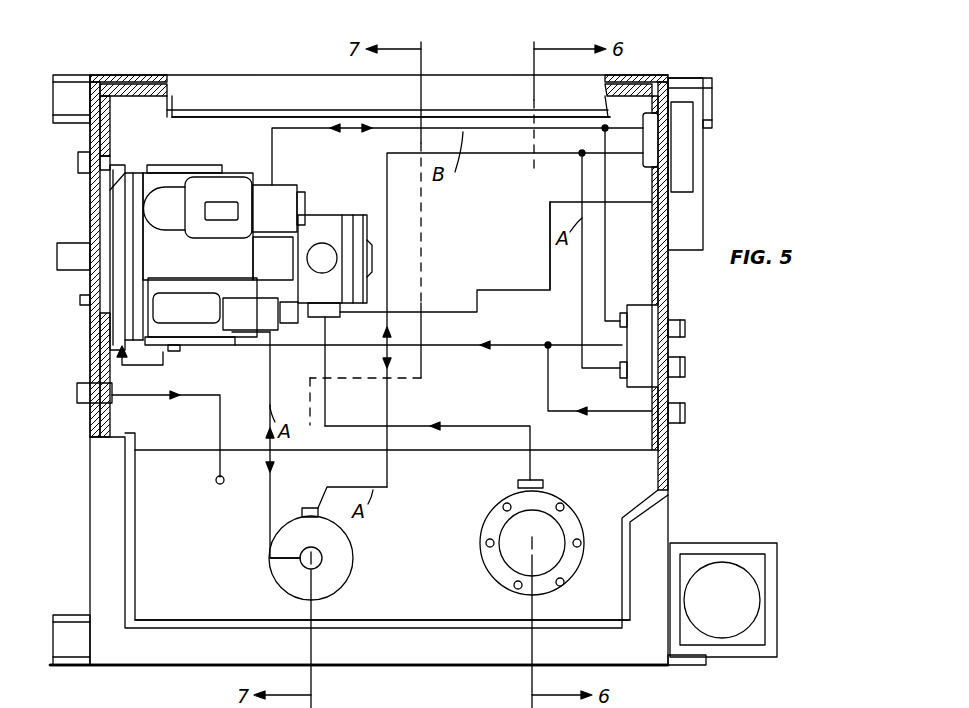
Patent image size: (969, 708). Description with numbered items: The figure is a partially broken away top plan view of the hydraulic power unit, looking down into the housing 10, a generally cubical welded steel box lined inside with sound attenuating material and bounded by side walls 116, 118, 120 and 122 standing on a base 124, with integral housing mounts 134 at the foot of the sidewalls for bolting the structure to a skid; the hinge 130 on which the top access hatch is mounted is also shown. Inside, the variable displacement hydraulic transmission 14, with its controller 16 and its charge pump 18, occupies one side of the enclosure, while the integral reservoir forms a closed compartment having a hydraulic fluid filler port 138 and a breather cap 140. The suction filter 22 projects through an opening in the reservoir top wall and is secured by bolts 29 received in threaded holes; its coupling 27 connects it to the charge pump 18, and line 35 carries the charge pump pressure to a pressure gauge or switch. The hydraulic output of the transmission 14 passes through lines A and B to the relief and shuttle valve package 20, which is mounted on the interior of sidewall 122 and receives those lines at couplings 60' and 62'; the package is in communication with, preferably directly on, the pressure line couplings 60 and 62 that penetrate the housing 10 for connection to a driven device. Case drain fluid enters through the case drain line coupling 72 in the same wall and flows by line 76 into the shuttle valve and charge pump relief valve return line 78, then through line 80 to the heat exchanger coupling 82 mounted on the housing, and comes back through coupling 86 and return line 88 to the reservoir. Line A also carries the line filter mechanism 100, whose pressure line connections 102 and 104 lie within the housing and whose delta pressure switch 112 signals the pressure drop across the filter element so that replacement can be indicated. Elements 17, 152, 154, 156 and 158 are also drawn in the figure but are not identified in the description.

The housing 10 is at (90, 540).
The variable displacement hydraulic transmission 14 is at (182, 264).
The controller 16 is at (207, 349).
The conduit 17 is at (497, 428).
The charge pump 18 is at (303, 371).
The relief and shuttle valve package 20 is at (648, 308).
The suction filter 22 is at (481, 543).
The coupling 27 is at (548, 478).
The bolts 29 is at (580, 538).
The line 35 is at (455, 312).
The pressure line coupling 60 is at (700, 357).
The coupling 60' is at (606, 381).
The pressure line coupling 62 is at (698, 314).
The coupling 62' is at (619, 297).
The case drain line coupling 72 is at (686, 413).
The line 76 is at (545, 382).
The shuttle valve and charge pump relief valve return line 78 is at (515, 350).
The line 80 is at (125, 175).
The heat exchanger coupling 82 is at (78, 160).
The coupling 86 is at (77, 394).
The return line 88 is at (222, 428).
The line filter mechanism 100 is at (358, 549).
The pressure line connection 102 is at (296, 548).
The pressure line connection 104 is at (302, 513).
The delta pressure switch 112 is at (432, 597).
The side wall 116 is at (452, 668).
The side wall 118 is at (90, 472).
The side wall 120 is at (275, 72).
The side wall 122 is at (668, 478).
The base 124 is at (527, 323).
The hinge 130 is at (498, 108).
The housing mounts 134 is at (72, 75).
The hydraulic fluid filler port 138 is at (778, 642).
The breather cap 140 is at (730, 562).
The fitting 152 is at (57, 252).
The fitting 154 is at (80, 300).
The relay housing 156 is at (705, 180).
The relay 158 is at (694, 152).